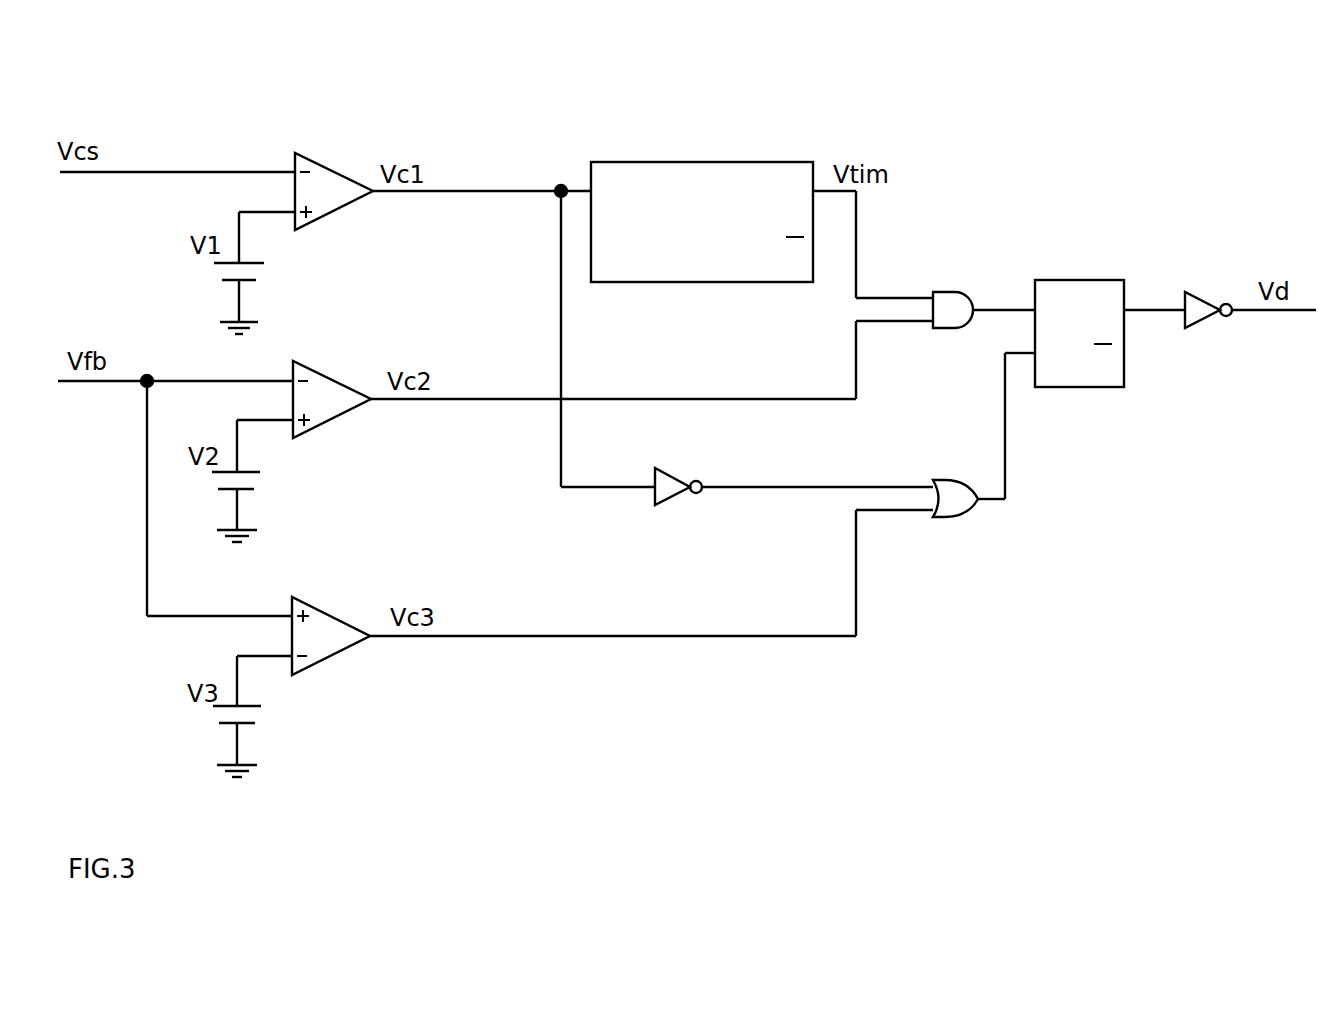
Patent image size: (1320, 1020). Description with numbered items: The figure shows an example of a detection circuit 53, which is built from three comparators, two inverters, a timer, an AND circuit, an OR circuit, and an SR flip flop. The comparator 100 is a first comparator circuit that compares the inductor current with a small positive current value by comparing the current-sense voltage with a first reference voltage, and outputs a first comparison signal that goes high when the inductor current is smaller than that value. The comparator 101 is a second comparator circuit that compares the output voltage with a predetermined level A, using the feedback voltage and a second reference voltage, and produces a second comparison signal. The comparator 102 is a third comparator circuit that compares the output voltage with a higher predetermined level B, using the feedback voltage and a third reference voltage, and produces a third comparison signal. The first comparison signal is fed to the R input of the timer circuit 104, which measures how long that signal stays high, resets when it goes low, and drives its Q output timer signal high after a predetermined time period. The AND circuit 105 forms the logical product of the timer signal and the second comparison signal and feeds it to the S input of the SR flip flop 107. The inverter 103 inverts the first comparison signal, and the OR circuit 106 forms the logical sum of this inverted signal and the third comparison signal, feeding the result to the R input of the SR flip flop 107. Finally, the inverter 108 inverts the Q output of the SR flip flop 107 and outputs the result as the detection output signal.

The detection circuit 53 is at (1022, 106).
The comparator 100 is at (304, 152).
The comparator 101 is at (303, 361).
The comparator 102 is at (303, 597).
The inverter 103 is at (665, 467).
The timer circuit 104 is at (591, 160).
The AND circuit 105 is at (936, 291).
The OR circuit 106 is at (938, 479).
The SR flip flop 107 is at (1058, 279).
The inverter 108 is at (1187, 292).